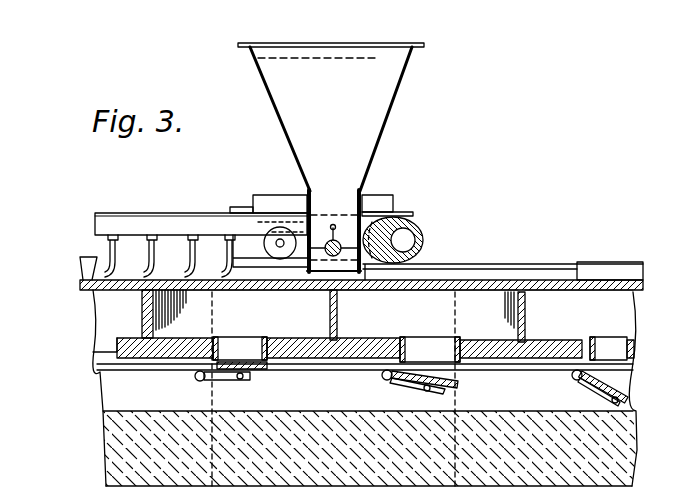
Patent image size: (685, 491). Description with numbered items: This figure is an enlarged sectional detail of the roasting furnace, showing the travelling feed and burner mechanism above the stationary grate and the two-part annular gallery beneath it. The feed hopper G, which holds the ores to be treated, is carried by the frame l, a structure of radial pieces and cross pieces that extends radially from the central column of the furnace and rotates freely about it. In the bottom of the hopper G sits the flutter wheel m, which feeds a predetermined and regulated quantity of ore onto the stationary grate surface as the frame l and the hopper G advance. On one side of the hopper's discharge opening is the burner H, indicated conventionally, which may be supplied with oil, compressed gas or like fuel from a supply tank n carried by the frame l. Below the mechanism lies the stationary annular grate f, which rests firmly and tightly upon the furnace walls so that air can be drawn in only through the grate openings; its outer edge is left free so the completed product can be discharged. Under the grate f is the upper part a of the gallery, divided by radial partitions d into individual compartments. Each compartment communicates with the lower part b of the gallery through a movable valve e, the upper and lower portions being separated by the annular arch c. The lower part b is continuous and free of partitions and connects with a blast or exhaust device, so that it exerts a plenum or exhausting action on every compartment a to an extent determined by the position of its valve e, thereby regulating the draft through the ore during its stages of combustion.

The feed hopper G is at (331, 157).
The frame l is at (253, 197).
The flutter wheel m is at (331, 233).
The burner H is at (421, 234).
The supply tank n is at (188, 251).
The stationary annular grate f is at (84, 291).
The radial partitions d is at (142, 313).
The upper part of the annular gallery a is at (393, 304).
The annular arch c is at (363, 340).
The movable valves e is at (612, 391).
The lower part of the annular gallery b is at (370, 435).